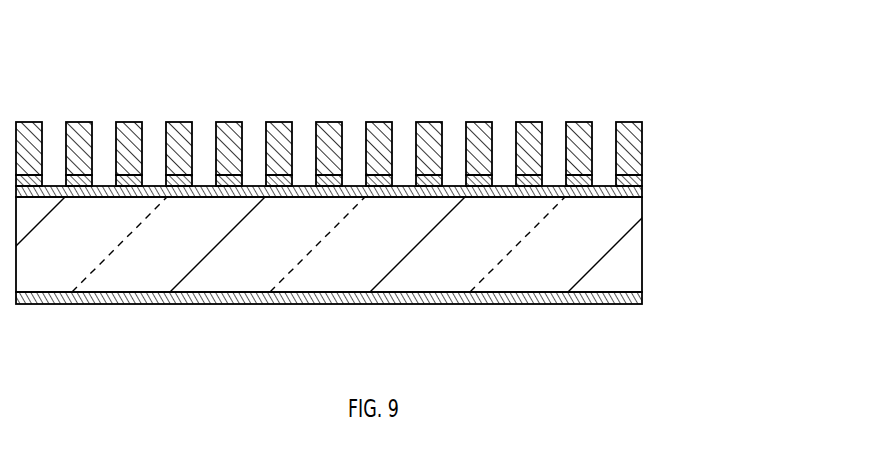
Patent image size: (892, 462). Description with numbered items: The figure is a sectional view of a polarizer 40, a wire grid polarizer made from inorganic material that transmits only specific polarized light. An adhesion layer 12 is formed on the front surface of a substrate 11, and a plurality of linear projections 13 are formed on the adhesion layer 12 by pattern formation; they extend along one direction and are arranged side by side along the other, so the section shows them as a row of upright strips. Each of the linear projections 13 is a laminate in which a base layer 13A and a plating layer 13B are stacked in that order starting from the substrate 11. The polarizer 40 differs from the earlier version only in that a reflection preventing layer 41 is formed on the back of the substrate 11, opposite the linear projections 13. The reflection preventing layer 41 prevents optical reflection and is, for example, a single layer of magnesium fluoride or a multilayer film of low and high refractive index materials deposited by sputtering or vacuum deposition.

The polarizer 40 is at (372, 159).
The linear projections 13 is at (380, 155).
The plating layer 13B is at (642, 147).
The base layer 13A is at (642, 176).
The adhesion layer 12 is at (642, 193).
The substrate 11 is at (642, 240).
The reflection preventing layer 41 is at (642, 296).